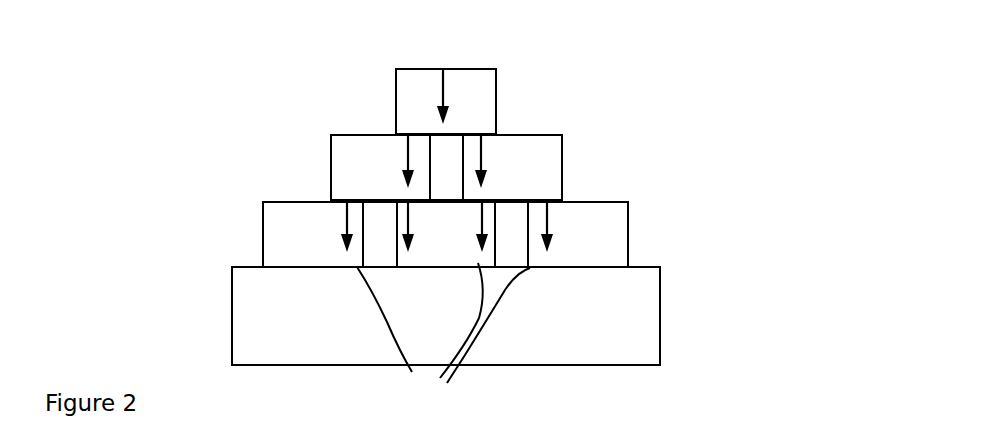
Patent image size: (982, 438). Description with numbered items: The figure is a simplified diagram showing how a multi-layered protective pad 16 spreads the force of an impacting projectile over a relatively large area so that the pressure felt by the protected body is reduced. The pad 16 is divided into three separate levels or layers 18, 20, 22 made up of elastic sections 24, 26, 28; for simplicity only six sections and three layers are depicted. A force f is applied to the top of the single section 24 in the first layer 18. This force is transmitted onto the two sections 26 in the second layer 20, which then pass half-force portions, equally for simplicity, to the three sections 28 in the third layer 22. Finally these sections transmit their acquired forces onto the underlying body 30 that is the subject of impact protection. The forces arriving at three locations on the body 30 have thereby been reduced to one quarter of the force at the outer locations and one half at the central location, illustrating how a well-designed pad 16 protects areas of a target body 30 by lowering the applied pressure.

The pad 16 is at (783, 65).
The first layer 18 is at (352, 92).
The second layer 20 is at (284, 143).
The third layer 22 is at (202, 205).
The section 24 is at (496, 90).
The sections 26 is at (430, 150).
The sections 28 is at (443, 334).
The body 30 is at (660, 333).